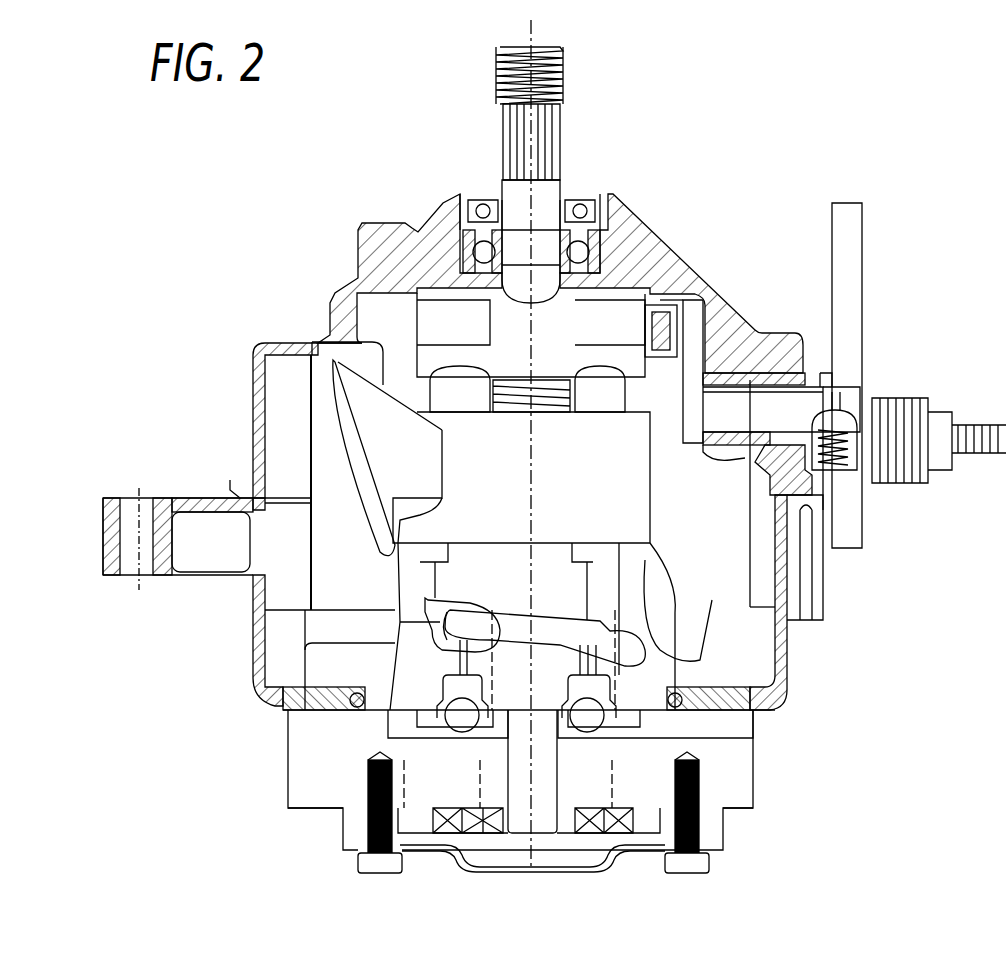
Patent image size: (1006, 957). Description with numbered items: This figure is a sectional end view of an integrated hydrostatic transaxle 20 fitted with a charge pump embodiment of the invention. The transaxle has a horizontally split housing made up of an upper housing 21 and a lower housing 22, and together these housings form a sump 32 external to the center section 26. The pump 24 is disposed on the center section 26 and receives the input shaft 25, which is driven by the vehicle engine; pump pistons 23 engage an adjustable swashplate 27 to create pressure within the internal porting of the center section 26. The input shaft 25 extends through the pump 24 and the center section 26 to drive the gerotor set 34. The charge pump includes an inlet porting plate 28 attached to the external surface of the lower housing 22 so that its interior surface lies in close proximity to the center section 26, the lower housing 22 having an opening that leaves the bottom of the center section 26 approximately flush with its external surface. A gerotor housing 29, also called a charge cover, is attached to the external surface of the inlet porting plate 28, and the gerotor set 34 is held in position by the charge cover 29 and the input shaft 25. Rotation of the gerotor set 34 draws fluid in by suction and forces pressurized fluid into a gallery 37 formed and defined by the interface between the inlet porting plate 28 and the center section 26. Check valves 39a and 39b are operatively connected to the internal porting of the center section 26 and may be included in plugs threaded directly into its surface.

The motor assembly 20 is at (238, 214).
The upper housing 21 is at (253, 412).
The lower housing 22 is at (253, 636).
The pump pistons 23 is at (613, 382).
The pump 24 is at (532, 561).
The input shaft 25 is at (562, 110).
The center section 26 is at (660, 595).
The adjustable swashplate 27 is at (613, 352).
The inlet porting plate 28 is at (740, 800).
The gerotor housing 29 is at (612, 875).
The sump 32 is at (512, 617).
The gerotor set 34 is at (486, 833).
The gallery 37 is at (440, 722).
The check valve 39a is at (450, 722).
The check valve 39b is at (598, 722).